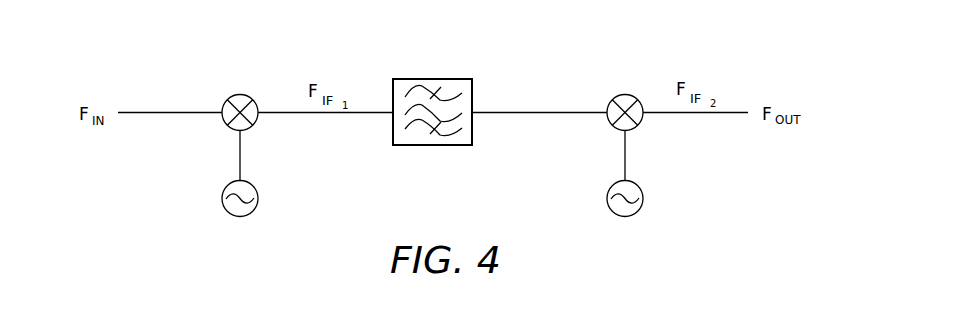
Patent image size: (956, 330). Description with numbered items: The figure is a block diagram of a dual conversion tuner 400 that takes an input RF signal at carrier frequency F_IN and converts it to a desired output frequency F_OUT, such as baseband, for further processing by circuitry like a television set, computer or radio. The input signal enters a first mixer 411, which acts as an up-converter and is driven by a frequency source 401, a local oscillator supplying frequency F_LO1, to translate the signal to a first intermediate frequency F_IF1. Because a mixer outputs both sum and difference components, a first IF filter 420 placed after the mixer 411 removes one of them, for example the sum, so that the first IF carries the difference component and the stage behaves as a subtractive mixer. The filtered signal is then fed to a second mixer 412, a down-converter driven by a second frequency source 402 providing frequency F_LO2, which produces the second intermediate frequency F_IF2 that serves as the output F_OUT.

The dual conversion tuner 400 is at (557, 58).
The mixer 411 is at (252, 125).
The frequency source 401 is at (256, 205).
The first IF filter 420 is at (428, 146).
The mixer 412 is at (637, 125).
The frequency source 402 is at (640, 208).